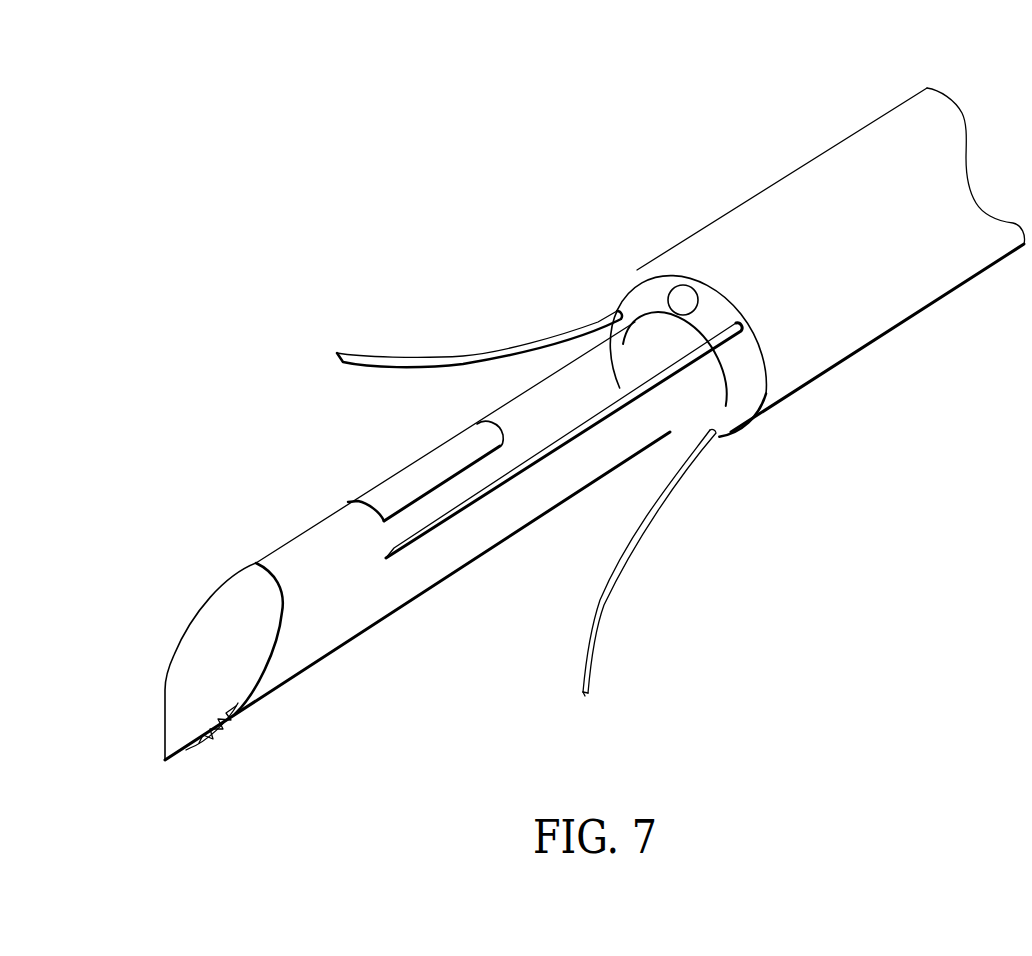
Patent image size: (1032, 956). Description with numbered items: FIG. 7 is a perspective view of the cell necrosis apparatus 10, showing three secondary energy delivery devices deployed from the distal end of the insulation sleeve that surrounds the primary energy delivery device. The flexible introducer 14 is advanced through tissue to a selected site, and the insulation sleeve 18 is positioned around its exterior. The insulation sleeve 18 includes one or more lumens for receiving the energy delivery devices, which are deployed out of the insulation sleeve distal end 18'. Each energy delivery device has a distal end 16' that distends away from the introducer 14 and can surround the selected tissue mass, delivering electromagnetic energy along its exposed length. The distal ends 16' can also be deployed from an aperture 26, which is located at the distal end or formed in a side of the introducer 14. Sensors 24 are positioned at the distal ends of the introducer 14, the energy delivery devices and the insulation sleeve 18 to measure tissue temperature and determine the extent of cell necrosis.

The surgical instrument 10 is at (621, 146).
The introducer 14 is at (355, 622).
The energy delivery device distal end 16' is at (539, 466).
The insulation sleeve 18 is at (831, 260).
The insulation sleeve distal end 18' is at (738, 359).
The sensor 24 is at (679, 291).
The aperture 26 is at (407, 483).